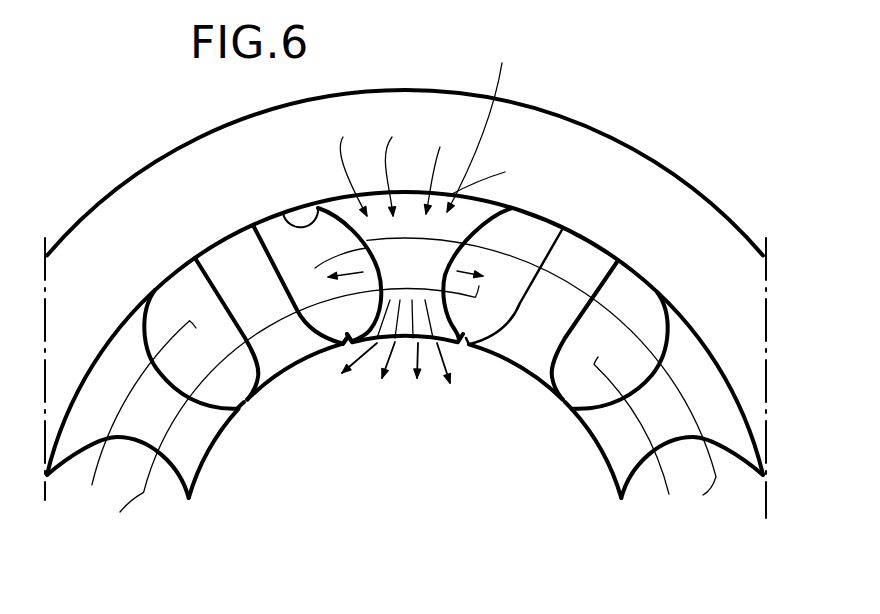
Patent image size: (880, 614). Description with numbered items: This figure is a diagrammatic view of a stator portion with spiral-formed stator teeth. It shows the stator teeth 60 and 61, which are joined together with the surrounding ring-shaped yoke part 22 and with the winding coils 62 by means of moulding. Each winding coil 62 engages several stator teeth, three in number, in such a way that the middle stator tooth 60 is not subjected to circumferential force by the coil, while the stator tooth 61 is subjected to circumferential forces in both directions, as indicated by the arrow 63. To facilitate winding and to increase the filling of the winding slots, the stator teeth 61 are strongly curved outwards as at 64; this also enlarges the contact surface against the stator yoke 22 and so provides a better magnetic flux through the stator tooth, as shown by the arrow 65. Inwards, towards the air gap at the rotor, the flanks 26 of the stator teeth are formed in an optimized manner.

The ring-shaped yoke part 22 is at (572, 147).
The middle stator tooth 60 is at (577, 248).
The winding coil 62 is at (614, 310).
The flanks of the stator teeth 26 is at (346, 348).
The outwardly curved portion of stator tooth 64 is at (283, 212).
The stator tooth 61 is at (406, 210).
The arrow indicating magnetic flux 65 is at (486, 122).
The arrow indicating circumferential forces 63 is at (459, 268).